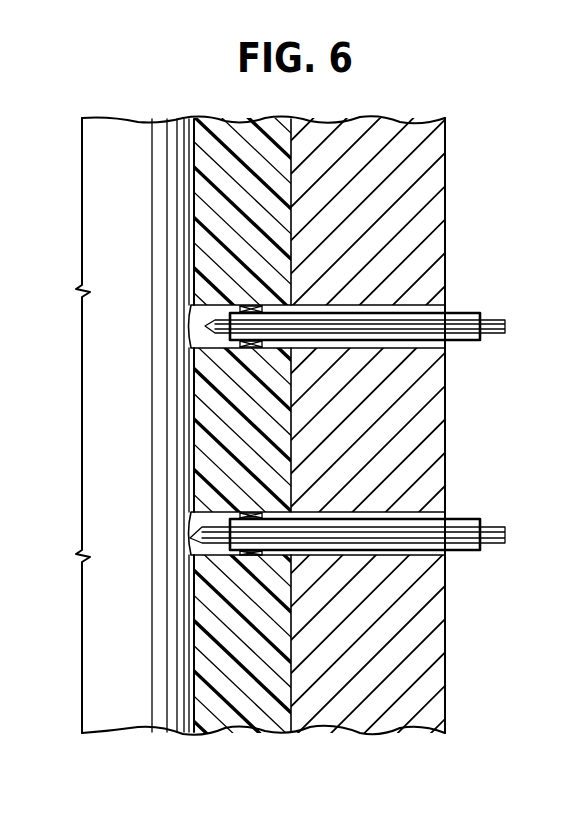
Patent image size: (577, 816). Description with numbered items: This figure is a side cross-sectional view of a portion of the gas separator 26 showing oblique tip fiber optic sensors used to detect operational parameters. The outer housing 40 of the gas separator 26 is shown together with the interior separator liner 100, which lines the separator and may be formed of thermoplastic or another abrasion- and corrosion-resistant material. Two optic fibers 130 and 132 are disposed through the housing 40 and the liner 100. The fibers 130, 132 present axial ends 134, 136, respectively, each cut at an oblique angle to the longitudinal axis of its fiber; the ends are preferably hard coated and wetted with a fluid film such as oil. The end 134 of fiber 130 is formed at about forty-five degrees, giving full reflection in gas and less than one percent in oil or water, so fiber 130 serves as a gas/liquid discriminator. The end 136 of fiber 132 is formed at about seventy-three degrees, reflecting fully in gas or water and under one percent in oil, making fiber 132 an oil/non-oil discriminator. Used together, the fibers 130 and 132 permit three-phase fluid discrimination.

The gas separator 26 is at (457, 208).
The housing 40 is at (447, 634).
The interior separator liner 100 is at (213, 200).
The optic fiber 130 is at (321, 305).
The optic fiber 132 is at (323, 512).
The axial end 134 is at (208, 327).
The axial end 136 is at (195, 540).